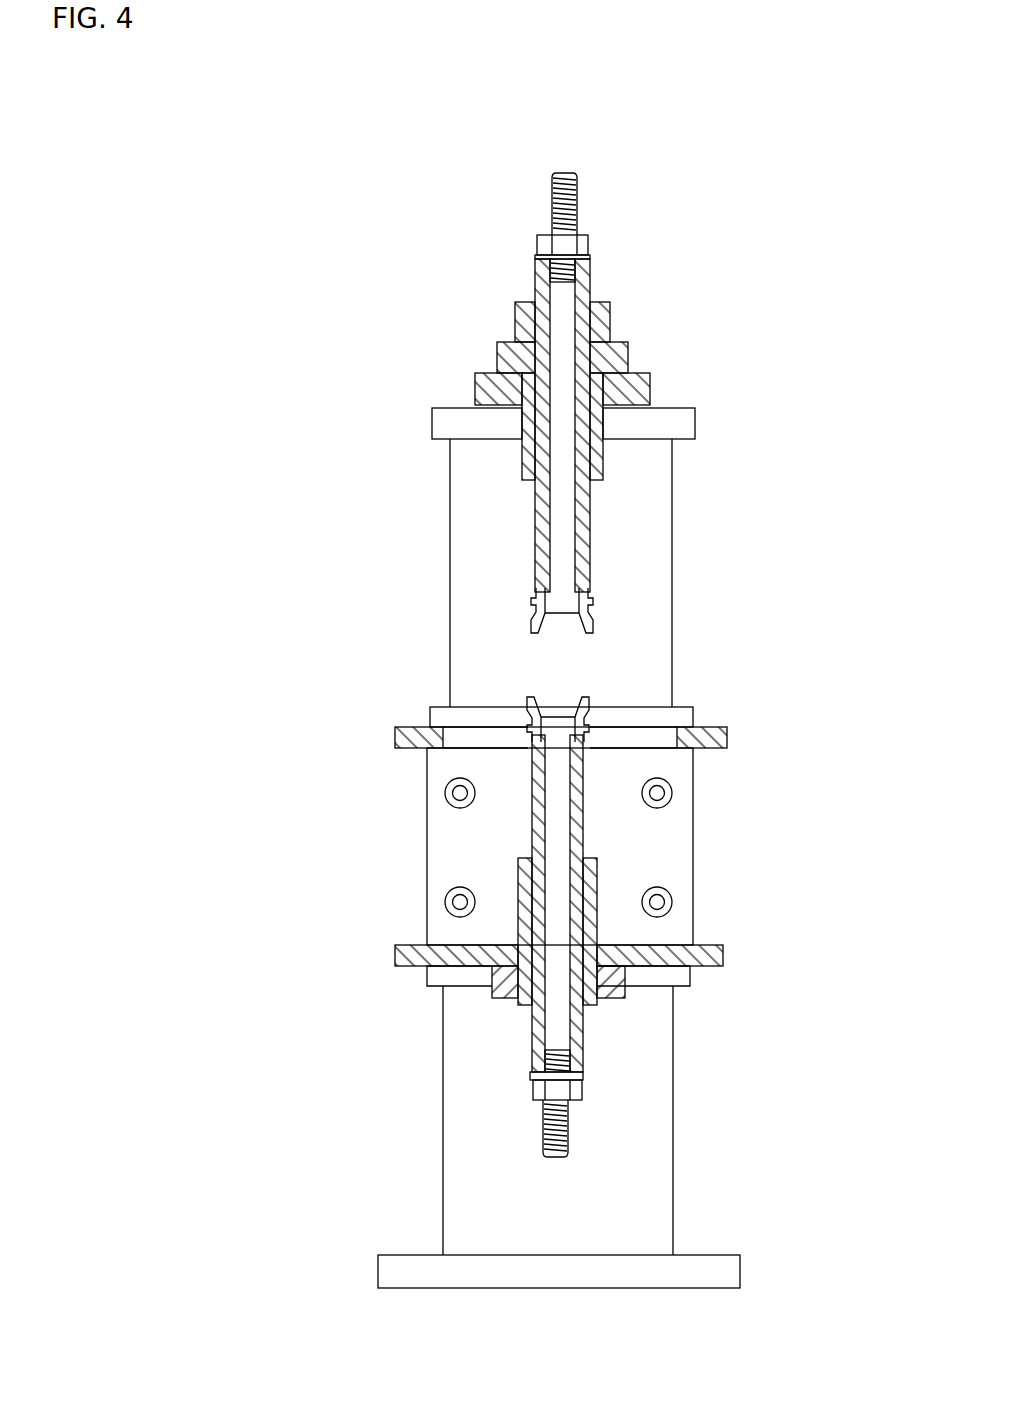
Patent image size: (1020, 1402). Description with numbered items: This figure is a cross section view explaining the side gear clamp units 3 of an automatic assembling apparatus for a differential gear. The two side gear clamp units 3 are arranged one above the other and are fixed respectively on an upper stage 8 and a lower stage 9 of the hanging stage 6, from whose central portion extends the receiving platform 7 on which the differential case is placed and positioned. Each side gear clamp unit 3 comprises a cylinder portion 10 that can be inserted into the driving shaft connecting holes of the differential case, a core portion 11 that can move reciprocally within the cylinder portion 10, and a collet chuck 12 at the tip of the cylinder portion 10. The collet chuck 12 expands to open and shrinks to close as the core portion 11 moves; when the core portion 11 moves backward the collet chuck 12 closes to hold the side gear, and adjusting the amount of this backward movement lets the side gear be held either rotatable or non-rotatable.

The side gear clamp unit 3 is at (620, 265).
The hanging stage 6 is at (663, 569).
The receiving platform 7 is at (727, 742).
The upper stage 8 is at (683, 418).
The lower stage 9 is at (723, 956).
The cylinder portion 10 is at (590, 520).
The core portion 11 is at (557, 510).
The collet chuck 12 is at (590, 613).